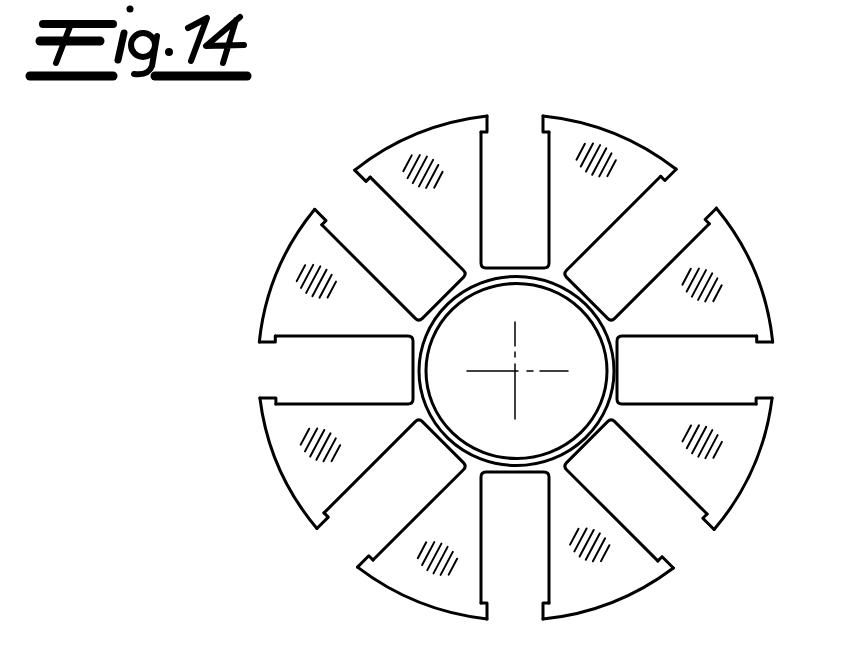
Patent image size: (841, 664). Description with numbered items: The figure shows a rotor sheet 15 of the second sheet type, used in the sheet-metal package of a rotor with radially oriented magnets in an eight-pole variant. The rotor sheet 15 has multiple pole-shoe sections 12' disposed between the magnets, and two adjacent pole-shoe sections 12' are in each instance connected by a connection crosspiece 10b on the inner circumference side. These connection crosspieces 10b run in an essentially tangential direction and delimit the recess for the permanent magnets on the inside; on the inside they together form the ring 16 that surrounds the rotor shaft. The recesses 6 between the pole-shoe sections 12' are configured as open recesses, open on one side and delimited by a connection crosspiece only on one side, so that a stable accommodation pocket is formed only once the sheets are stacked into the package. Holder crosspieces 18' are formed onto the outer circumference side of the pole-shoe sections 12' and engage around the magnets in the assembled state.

The rotor sheet of the second sheet type 15 is at (537, 337).
The pole-shoe section 12' is at (749, 260).
The holder crosspiece 18' is at (660, 224).
The recess 6 is at (708, 387).
The ring 16 is at (423, 357).
The connection crosspiece 10b is at (587, 300).